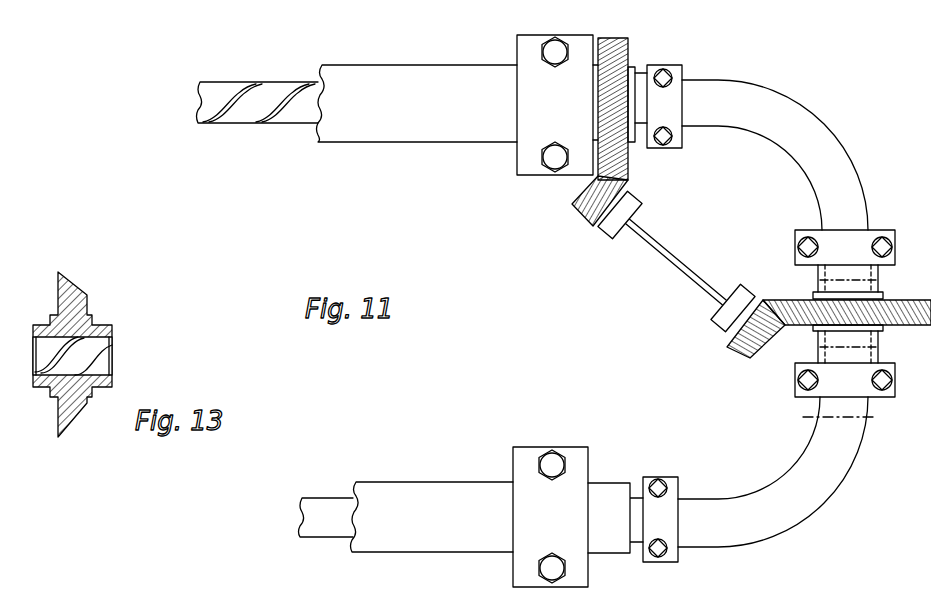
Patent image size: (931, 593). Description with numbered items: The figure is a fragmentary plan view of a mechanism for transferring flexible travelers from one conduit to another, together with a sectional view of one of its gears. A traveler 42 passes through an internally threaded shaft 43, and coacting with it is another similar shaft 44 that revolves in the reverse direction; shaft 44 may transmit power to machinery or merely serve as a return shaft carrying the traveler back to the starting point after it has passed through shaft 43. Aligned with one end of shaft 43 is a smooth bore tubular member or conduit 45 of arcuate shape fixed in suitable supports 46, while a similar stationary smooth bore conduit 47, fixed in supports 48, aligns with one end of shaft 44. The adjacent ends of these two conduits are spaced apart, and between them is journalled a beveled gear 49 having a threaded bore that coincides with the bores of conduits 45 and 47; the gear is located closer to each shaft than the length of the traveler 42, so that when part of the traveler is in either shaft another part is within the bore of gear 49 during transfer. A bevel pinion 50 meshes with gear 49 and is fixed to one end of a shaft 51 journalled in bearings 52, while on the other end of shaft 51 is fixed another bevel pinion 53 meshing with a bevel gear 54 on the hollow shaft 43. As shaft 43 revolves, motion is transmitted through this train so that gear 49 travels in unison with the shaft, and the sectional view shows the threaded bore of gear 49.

In FIG. 11, the traveler 42 is at (268, 86).
In FIG. 11, the internally threaded shaft 43 is at (428, 137).
In FIG. 11, the shaft 44 is at (449, 482).
In FIG. 11, the smooth bore tubular member or conduit 45 is at (772, 136).
In FIG. 11, the supports 46 is at (684, 70).
In FIG. 11, the stationary smooth bore member or conduit 47 is at (765, 488).
In FIG. 11, the supports 48 is at (672, 477).
In FIG. 11, the beveled gear 49 is at (800, 300).
In FIG. 13, the beveled gear 49 is at (86, 306).
In FIG. 11, the bevel pinion 50 is at (738, 354).
In FIG. 11, the shaft 51 is at (660, 258).
In FIG. 11, the bearings 52 is at (607, 235).
In FIG. 11, the bevel pinion 53 is at (578, 214).
In FIG. 11, the bevel gear 54 is at (628, 168).